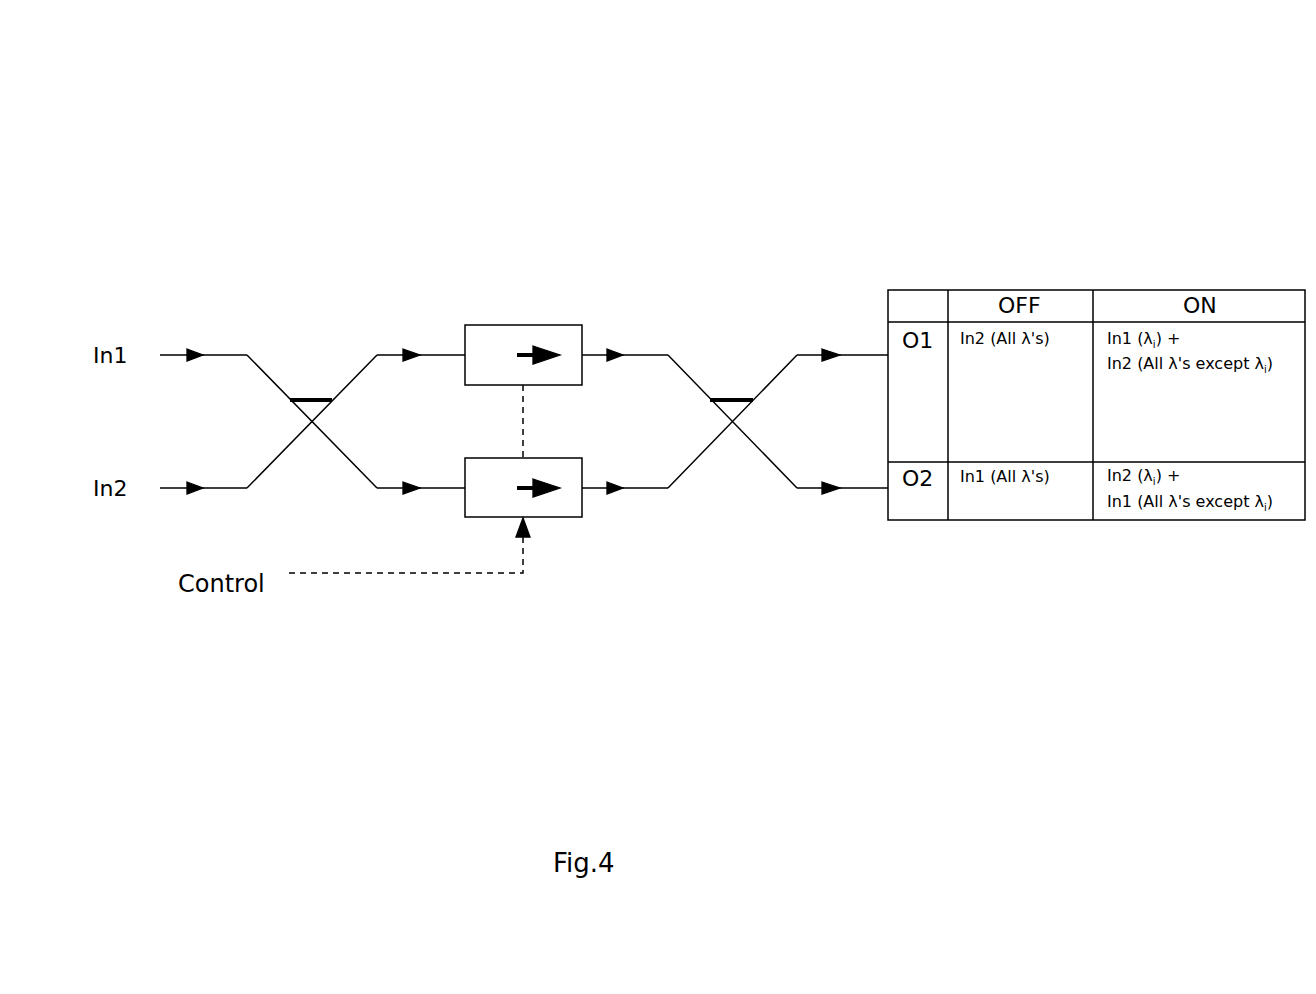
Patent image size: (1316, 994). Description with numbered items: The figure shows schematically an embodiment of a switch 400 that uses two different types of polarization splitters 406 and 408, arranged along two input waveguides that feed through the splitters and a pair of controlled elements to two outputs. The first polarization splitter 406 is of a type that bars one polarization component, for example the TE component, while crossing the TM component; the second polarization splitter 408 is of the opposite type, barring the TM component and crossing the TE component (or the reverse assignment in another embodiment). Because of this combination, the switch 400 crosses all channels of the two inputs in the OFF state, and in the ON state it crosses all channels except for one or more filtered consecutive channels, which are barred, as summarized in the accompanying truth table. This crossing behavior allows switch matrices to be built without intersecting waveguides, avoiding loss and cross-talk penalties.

The switch 400 is at (543, 632).
The polarization splitter 406 is at (321, 332).
The polarization splitter 408 is at (730, 332).